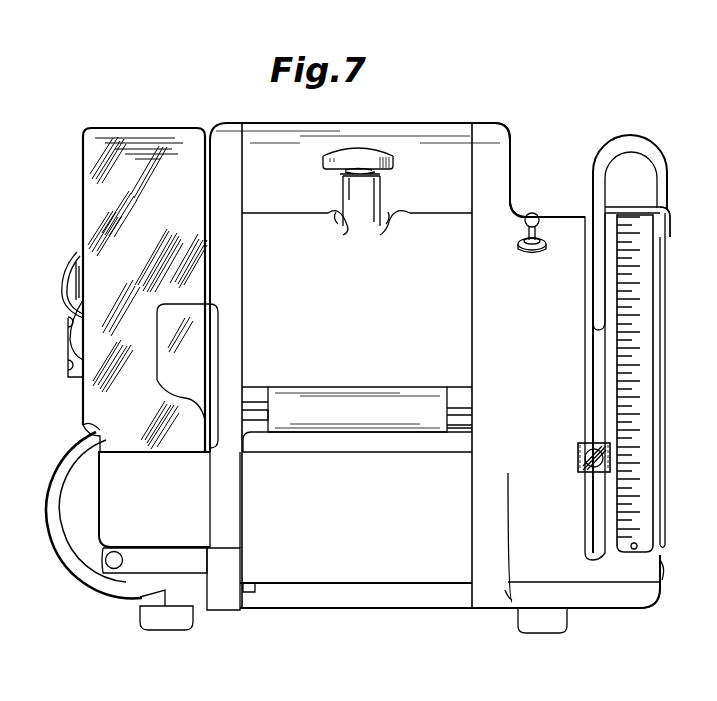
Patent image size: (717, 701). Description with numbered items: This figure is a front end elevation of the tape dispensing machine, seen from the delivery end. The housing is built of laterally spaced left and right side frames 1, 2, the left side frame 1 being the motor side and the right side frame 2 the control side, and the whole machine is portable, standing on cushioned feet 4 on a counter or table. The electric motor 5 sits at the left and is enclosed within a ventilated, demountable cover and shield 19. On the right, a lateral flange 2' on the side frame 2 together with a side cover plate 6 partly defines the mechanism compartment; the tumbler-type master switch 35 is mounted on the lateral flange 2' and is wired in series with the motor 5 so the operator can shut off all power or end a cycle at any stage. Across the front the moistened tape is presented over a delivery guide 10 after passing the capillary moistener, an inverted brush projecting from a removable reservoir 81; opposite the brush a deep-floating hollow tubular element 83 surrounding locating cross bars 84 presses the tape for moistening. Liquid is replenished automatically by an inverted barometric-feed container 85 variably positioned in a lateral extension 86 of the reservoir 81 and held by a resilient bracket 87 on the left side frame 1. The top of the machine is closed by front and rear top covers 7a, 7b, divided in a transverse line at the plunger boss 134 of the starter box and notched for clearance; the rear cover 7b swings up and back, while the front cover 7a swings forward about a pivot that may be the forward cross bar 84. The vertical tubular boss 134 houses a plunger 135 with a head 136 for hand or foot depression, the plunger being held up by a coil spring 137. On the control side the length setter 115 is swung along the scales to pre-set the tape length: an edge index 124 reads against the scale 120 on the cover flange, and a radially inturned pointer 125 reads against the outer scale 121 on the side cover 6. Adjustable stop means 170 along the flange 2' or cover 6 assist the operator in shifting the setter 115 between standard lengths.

The left side frame 1 is at (226, 122).
The right side frame 2 is at (499, 159).
The lateral flange 2' is at (565, 372).
The cushioned feet 4 is at (182, 616).
The electric motor 5 is at (58, 445).
The side cover plate 6 is at (650, 568).
The front top cover 7a is at (256, 242).
The rear top cover 7b is at (256, 167).
The delivery guide 10 is at (380, 446).
The cover and shield 19 is at (98, 577).
The master switch 35 is at (522, 227).
The reservoir 81 is at (364, 573).
The tubular element 83 is at (333, 397).
The cross bars 84 is at (465, 410).
The container 85 is at (122, 133).
The lateral extension 86 is at (115, 507).
The resilient bracket 87 is at (68, 300).
The length setter 115 is at (650, 158).
The scale 120 is at (643, 338).
The scale 121 is at (668, 258).
The edge index 124 is at (627, 212).
The pointer 125 is at (672, 230).
The tubular boss 134 is at (345, 193).
The plunger 135 is at (382, 172).
The head 136 is at (386, 154).
The coil spring 137 is at (342, 171).
The stop means 170 is at (590, 442).